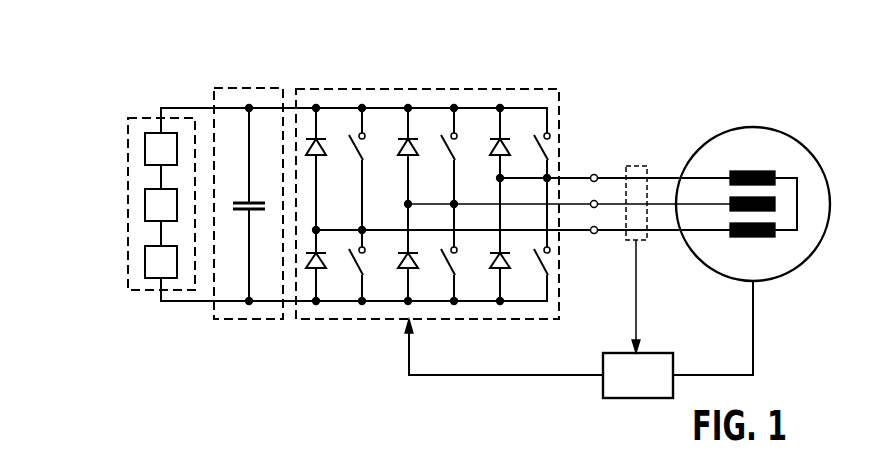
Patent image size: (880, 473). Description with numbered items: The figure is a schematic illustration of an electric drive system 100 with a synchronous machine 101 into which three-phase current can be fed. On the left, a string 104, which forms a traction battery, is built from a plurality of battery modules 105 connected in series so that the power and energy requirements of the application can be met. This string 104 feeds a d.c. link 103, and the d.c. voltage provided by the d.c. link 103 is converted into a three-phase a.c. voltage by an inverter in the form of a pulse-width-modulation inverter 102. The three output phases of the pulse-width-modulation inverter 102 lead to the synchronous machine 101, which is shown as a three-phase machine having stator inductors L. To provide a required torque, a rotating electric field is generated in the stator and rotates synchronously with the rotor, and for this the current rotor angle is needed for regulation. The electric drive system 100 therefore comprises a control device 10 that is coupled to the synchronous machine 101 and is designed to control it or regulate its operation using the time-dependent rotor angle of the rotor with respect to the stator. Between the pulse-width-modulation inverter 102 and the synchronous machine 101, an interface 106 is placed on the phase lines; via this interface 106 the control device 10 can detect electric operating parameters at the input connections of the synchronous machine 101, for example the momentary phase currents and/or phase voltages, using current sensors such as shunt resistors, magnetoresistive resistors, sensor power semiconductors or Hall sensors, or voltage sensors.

The electric drive system 100 is at (100, 100).
The synchronous machine 101 is at (754, 127).
The pulse-width-modulation inverter 102 is at (527, 89).
The d.c. link 103 is at (255, 88).
The string 104 is at (133, 118).
The battery module 105 is at (145, 261).
The interface 106 is at (637, 166).
The control device 10 is at (603, 363).
The stator inductor L is at (763, 238).